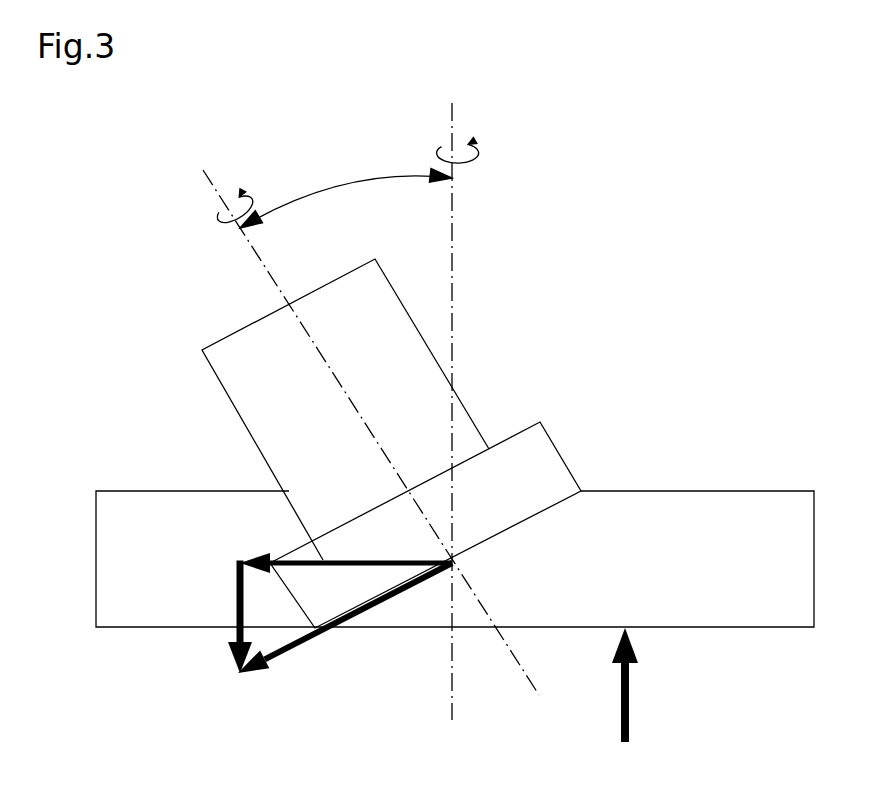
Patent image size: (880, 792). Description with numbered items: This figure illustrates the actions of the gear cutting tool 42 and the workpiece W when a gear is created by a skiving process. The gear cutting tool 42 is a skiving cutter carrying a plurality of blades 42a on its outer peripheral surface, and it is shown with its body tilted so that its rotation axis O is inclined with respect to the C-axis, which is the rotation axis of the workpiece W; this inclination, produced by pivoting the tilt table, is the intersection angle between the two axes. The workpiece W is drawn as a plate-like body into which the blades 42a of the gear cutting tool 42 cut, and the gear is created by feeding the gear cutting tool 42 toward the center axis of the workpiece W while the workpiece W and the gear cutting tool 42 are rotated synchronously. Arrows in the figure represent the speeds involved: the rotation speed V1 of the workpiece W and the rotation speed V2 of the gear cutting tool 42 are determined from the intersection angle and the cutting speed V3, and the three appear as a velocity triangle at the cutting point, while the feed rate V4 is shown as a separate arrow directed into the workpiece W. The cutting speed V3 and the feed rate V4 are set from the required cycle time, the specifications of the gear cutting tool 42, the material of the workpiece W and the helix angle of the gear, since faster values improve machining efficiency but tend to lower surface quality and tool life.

The gear cutting tool 42 is at (498, 337).
The blade 42a is at (557, 440).
The workpiece W is at (96, 505).
The rotation axis of the gear cutting tool O is at (215, 178).
The C-axis C is at (452, 115).
The rotation speed of the workpiece V1 is at (320, 558).
The rotation speed of the gear cutting tool V2 is at (313, 628).
The cutting speed V3 is at (237, 594).
The feed rate V4 is at (645, 685).